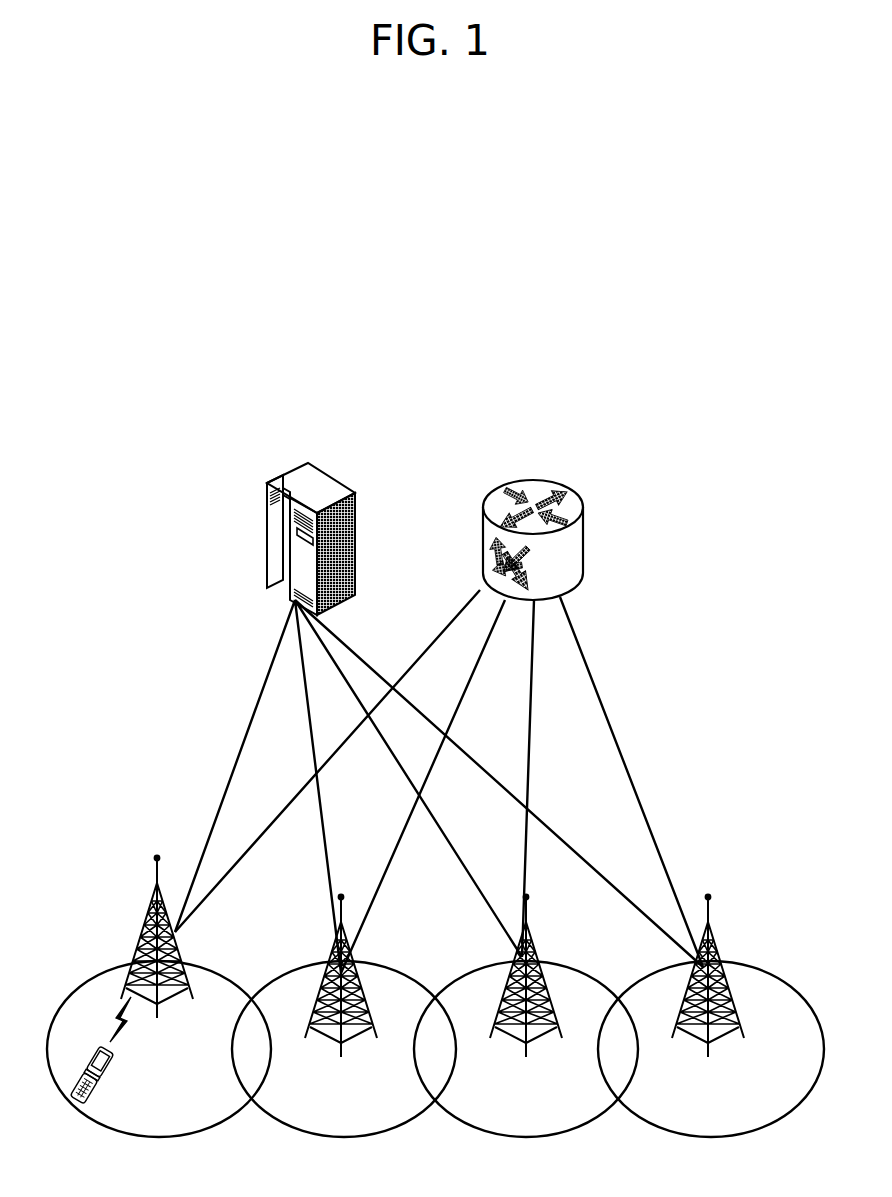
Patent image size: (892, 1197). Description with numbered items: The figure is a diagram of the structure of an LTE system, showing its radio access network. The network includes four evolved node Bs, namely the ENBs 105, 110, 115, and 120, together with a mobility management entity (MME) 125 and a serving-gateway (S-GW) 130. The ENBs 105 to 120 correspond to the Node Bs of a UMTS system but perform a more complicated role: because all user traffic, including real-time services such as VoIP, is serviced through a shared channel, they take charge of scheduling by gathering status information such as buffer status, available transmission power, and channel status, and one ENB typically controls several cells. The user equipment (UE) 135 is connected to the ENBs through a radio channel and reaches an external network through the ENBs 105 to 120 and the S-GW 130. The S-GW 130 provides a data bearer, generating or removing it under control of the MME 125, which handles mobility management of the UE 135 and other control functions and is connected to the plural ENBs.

The evolved node B 105 is at (145, 915).
The evolved node B 110 is at (333, 938).
The evolved node B 115 is at (532, 938).
The evolved node B 120 is at (715, 937).
The mobility management entity 125 is at (283, 470).
The serving-gateway 130 is at (515, 480).
The user equipment 135 is at (108, 1066).